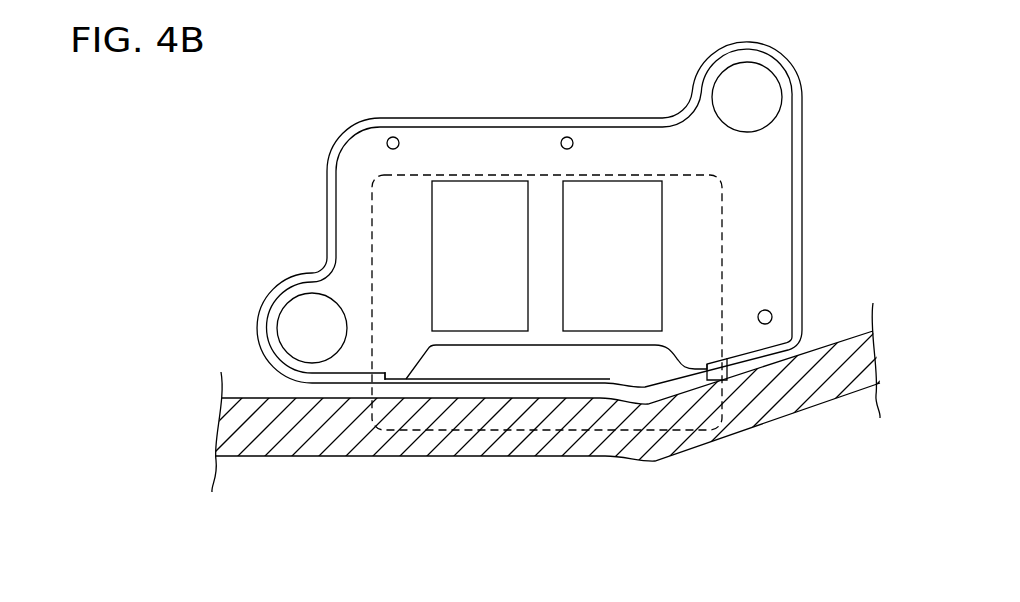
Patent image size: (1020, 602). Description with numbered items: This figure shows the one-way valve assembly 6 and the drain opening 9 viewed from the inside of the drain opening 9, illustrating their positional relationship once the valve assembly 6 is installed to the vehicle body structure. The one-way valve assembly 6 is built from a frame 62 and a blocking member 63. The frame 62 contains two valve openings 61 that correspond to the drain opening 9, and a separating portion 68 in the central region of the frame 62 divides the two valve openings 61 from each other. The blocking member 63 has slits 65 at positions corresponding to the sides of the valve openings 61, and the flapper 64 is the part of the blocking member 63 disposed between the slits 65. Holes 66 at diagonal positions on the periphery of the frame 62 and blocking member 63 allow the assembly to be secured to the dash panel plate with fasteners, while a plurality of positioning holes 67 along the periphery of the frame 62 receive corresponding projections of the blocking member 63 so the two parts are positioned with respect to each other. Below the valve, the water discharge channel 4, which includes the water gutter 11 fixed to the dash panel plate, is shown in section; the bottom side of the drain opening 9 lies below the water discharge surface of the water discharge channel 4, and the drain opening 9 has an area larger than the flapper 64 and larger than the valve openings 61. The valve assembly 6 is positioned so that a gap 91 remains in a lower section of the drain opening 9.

The water discharge channel 4 is at (343, 395).
The one-way valve assembly 6 is at (390, 70).
The drain opening 9 is at (712, 234).
The water gutter 11 is at (577, 442).
The valve openings 61 is at (432, 230).
The frame 62 is at (457, 155).
The blocking member 63 is at (510, 127).
The flapper 64 is at (612, 310).
The slits 65 is at (400, 375).
The holes 66 is at (740, 88).
The positioning holes 67 is at (392, 137).
The separating portion 68 is at (545, 310).
The gap 91 is at (478, 392).